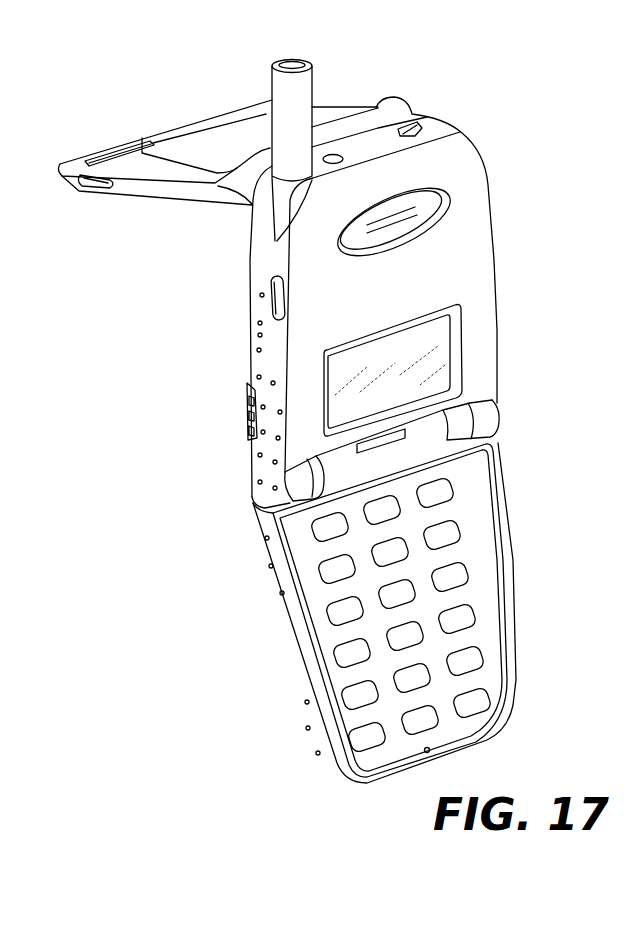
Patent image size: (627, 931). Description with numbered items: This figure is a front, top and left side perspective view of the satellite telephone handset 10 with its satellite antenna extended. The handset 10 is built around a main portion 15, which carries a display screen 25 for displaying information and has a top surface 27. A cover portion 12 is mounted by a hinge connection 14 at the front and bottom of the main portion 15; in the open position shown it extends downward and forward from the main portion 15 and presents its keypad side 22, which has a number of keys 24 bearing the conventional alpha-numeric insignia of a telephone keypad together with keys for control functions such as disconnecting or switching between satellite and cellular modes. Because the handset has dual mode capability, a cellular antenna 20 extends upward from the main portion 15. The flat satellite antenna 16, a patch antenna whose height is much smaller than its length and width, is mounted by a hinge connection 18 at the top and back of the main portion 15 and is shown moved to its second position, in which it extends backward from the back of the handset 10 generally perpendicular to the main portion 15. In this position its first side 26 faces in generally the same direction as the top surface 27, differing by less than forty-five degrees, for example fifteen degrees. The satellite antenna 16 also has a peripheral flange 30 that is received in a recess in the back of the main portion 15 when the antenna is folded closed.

The satellite telephone handset 10 is at (208, 290).
The cover portion 12 is at (290, 660).
The hinge connection 14 is at (462, 442).
The main portion 15 is at (257, 335).
The flat satellite antenna 16 is at (157, 138).
The hinge connection 18 is at (377, 114).
The cellular antenna 20 is at (278, 84).
The keypad side 22 is at (485, 585).
The keys 24 is at (487, 696).
The display screen 25 is at (436, 352).
The first side 26 is at (188, 128).
The top surface 27 is at (430, 125).
The peripheral flange 30 is at (187, 193).